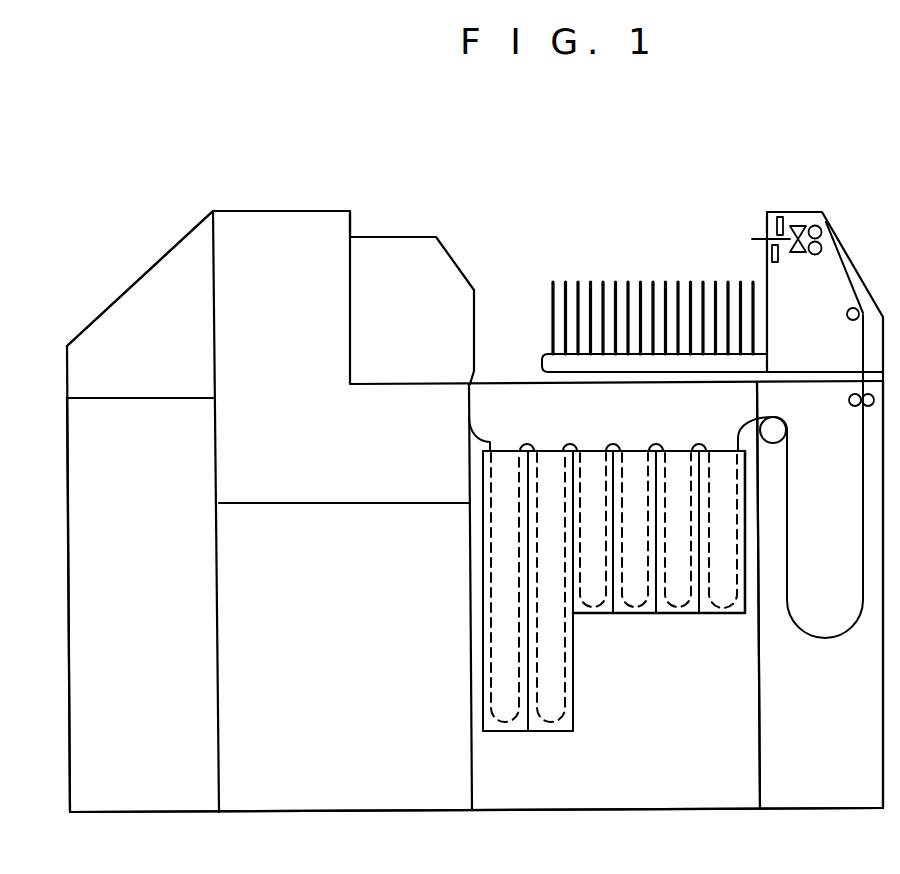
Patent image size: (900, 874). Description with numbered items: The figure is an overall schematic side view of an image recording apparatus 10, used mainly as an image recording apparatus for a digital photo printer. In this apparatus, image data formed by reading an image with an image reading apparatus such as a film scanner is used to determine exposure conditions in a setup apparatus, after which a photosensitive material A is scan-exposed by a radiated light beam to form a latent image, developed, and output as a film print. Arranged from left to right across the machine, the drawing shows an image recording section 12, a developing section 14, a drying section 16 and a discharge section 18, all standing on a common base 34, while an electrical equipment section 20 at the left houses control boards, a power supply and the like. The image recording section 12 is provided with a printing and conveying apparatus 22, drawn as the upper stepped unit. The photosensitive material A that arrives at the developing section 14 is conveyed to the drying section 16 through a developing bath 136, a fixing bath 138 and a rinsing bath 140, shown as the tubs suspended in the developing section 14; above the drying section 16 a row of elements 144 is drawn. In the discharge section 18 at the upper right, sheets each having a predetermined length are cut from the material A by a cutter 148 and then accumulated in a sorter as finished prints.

The image recording apparatus 10 is at (486, 222).
The image recording section 12 is at (121, 271).
The developing section 14 is at (636, 762).
The drying section 16 is at (810, 581).
The discharge section 18 is at (719, 238).
The electrical equipment section 20 is at (82, 601).
The printing and conveying apparatus 22 is at (312, 237).
The base 34 is at (393, 781).
The developing bath 136 is at (508, 731).
The fixing bath 138 is at (553, 731).
The rinsing bath 140 is at (740, 621).
The connector pins 144 is at (624, 274).
The cutter 148 is at (781, 216).
The photosensitive material A is at (791, 579).